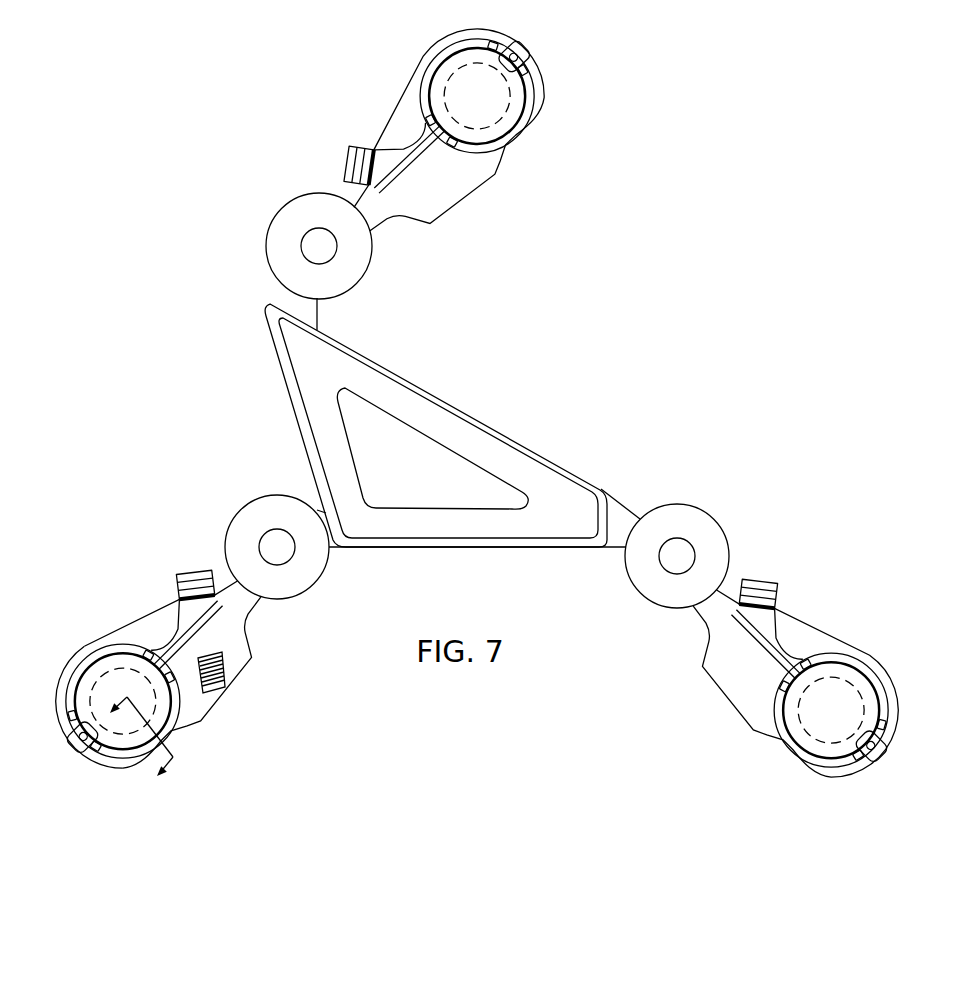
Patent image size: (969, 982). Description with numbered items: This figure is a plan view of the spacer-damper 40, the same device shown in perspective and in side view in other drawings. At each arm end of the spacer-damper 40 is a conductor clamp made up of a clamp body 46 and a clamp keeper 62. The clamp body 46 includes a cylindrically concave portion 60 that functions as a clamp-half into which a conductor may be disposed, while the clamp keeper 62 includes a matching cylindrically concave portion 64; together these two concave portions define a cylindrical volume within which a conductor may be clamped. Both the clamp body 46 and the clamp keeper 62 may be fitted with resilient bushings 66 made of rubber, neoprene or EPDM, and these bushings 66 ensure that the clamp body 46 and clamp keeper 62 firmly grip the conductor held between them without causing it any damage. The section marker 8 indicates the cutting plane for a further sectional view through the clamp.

The spacer-damper 40 is at (480, 328).
The clamp body 46 is at (166, 649).
The cylindrically concave portion 60 is at (118, 705).
The clamp keeper 62 is at (168, 659).
The cylindrically concave portion 64 is at (96, 714).
The resilient bushings 66 is at (197, 727).
The section line 8- 8 is at (142, 735).